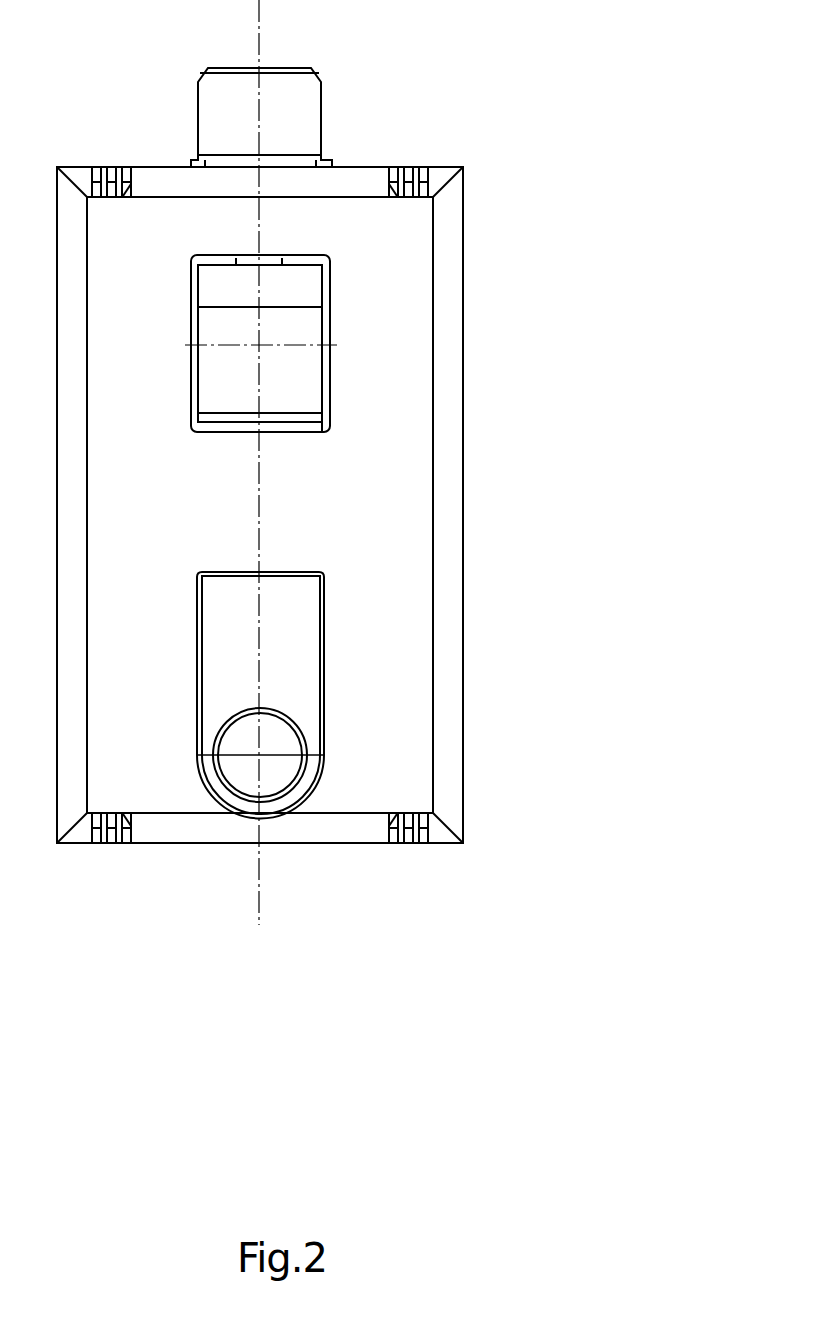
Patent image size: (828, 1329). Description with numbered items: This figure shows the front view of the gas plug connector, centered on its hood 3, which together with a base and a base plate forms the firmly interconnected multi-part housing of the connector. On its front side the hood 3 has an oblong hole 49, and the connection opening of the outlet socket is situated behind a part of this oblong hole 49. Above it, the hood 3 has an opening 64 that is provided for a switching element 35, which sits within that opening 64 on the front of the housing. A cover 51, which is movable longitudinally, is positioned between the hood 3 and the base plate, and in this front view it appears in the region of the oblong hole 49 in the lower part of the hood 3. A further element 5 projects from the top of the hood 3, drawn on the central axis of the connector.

The hood 3 is at (394, 500).
The connection boss 5 is at (461, 83).
The switching element 35 is at (458, 343).
The opening 64 is at (526, 472).
The cover 51 is at (465, 695).
The oblong hole 49 is at (526, 766).